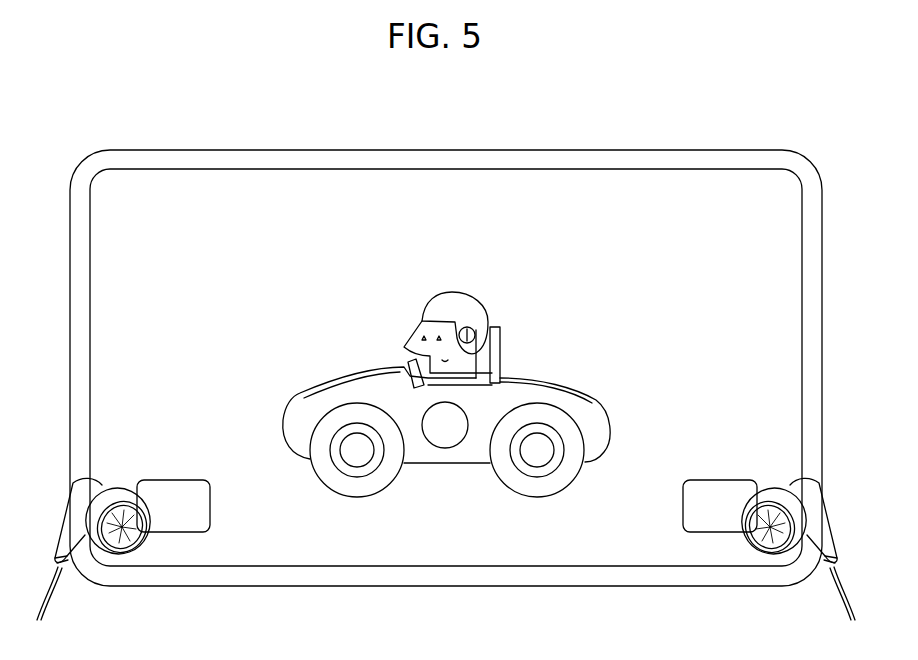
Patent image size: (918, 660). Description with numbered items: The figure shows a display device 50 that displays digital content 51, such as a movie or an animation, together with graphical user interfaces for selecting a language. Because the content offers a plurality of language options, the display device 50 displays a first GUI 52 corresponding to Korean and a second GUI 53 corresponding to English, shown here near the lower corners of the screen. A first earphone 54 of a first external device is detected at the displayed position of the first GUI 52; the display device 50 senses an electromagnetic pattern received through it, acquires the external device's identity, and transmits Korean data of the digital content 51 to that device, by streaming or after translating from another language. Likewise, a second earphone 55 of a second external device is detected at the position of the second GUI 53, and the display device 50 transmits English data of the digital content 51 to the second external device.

The display device 50 is at (615, 158).
The digital content 51 is at (454, 523).
The first GUI 52 is at (190, 523).
The second GUI 53 is at (703, 533).
The first earphone 54 is at (43, 592).
The second earphone 55 is at (847, 590).